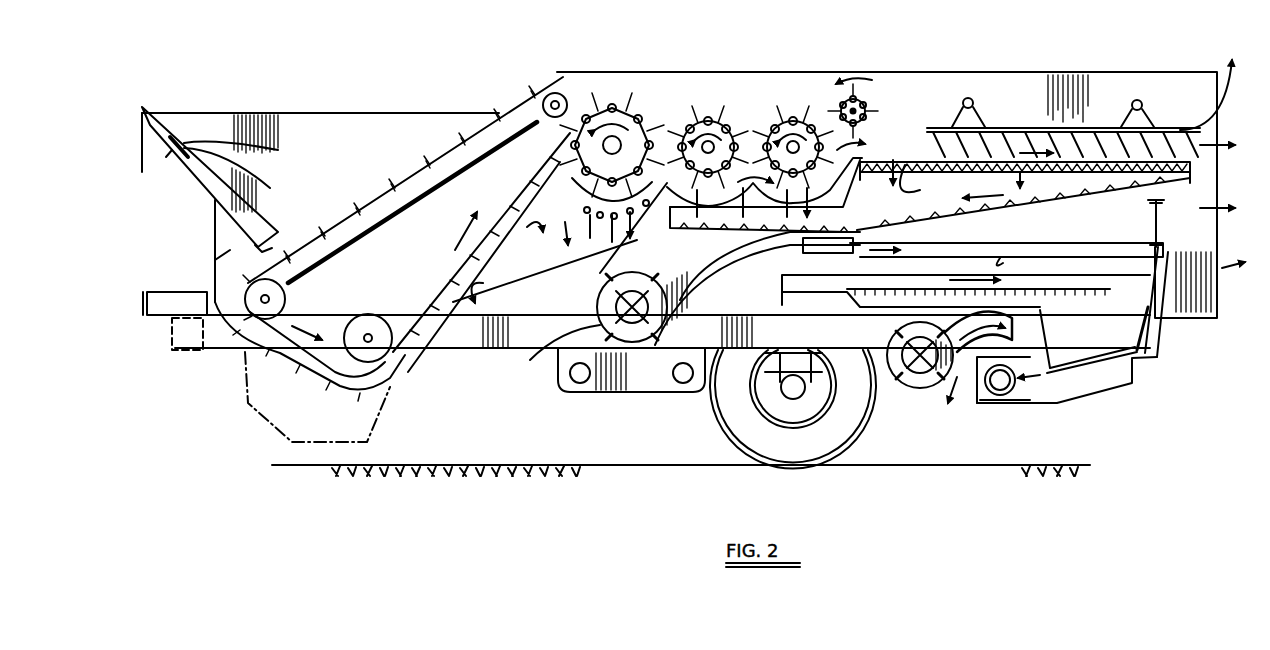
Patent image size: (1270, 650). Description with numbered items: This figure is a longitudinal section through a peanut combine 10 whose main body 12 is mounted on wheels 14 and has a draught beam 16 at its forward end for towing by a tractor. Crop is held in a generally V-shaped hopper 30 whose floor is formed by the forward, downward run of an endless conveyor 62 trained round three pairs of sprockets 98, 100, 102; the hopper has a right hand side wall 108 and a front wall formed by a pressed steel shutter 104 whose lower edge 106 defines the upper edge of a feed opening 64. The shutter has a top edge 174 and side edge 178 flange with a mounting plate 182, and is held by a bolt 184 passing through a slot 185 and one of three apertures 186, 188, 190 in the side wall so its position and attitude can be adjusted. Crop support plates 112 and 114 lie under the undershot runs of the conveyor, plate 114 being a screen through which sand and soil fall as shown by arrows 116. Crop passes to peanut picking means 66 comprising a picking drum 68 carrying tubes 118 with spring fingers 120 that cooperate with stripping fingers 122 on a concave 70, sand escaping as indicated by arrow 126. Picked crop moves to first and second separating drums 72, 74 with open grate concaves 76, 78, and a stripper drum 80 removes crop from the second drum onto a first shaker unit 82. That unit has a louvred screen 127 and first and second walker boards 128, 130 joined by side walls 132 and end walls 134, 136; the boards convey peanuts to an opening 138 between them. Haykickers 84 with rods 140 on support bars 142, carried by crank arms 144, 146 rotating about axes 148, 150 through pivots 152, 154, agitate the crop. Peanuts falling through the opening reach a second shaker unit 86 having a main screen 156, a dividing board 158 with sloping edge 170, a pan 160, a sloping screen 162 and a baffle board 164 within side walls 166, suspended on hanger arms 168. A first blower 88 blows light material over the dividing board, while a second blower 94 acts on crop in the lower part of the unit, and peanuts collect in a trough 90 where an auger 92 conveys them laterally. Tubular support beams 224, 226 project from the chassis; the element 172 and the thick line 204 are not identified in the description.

The peanut combine 10 is at (533, 77).
The main body 12 is at (1025, 70).
The wheels 14 is at (725, 430).
The draught beam 16 is at (155, 290).
The hopper 30 is at (333, 182).
The endless conveyor 62 is at (447, 150).
The feed opening 64 is at (215, 262).
The peanut picking means 66 is at (590, 85).
The peanut picking drum 68 is at (635, 100).
The concave 70 is at (540, 248).
The first rotary peanut separating drum 72 is at (725, 110).
The second rotary peanut separating drum 74 is at (805, 118).
The open grate concave 76 is at (655, 215).
The open grate concave 78 is at (740, 255).
The rotary stripper drum 80 is at (865, 98).
The first shaker unit 82 is at (1080, 150).
The haykickers 84 is at (1193, 120).
The second shaker unit 86 is at (1175, 258).
The first blower 88 is at (530, 362).
The trough 90 is at (995, 403).
The auger 92 is at (975, 395).
The second blower 94 is at (905, 388).
The sprockets 98 is at (285, 298).
The sprockets 100 is at (367, 315).
The sprockets 102 is at (560, 92).
The shutter 104 is at (232, 235).
The lower edge 106 is at (268, 220).
The side wall 108 is at (355, 125).
The crop support plate 112 is at (312, 370).
The crop support plate 114 is at (448, 328).
The arrows 116 is at (494, 212).
The detachable tubes 118 is at (270, 432).
The spring fingers 120 is at (660, 110).
The stripping fingers 122 is at (610, 238).
The arrow 126 is at (583, 185).
The screen 127 is at (878, 157).
The first walker board 128 is at (710, 232).
The second walker board 130 is at (1130, 218).
The side walls 132 is at (1160, 180).
The end wall 134 is at (642, 305).
The end wall 136 is at (1195, 173).
The opening 138 is at (985, 233).
The rods 140 is at (1214, 122).
The support bars 142 is at (1035, 125).
The crank arm 144 is at (985, 120).
The crank arm 146 is at (1145, 115).
The axis 148 is at (967, 97).
The axis 150 is at (1140, 95).
The pivot 152 is at (955, 120).
The pivot 154 is at (1120, 120).
The main screen 156 is at (1035, 282).
The dividing board 158 is at (865, 265).
The pan 160 is at (860, 318).
The sloping screen 162 is at (1110, 380).
The baffle board 164 is at (1158, 340).
The side walls 166 is at (1185, 305).
The hanger arms 168 is at (1170, 232).
The sloping edge 170 is at (830, 275).
The hook 172 is at (1003, 260).
The top edge 174 is at (126, 103).
The side edge 178 is at (165, 110).
The mounting plate 182 is at (320, 215).
The bolt 184 is at (245, 173).
The slot 185 is at (190, 137).
The aperture 186 is at (168, 160).
The aperture 188 is at (175, 150).
The aperture 190 is at (248, 154).
The belt backing plate 204 is at (410, 180).
The tubular support beam 224 is at (585, 392).
The tubular support beam 226 is at (675, 393).